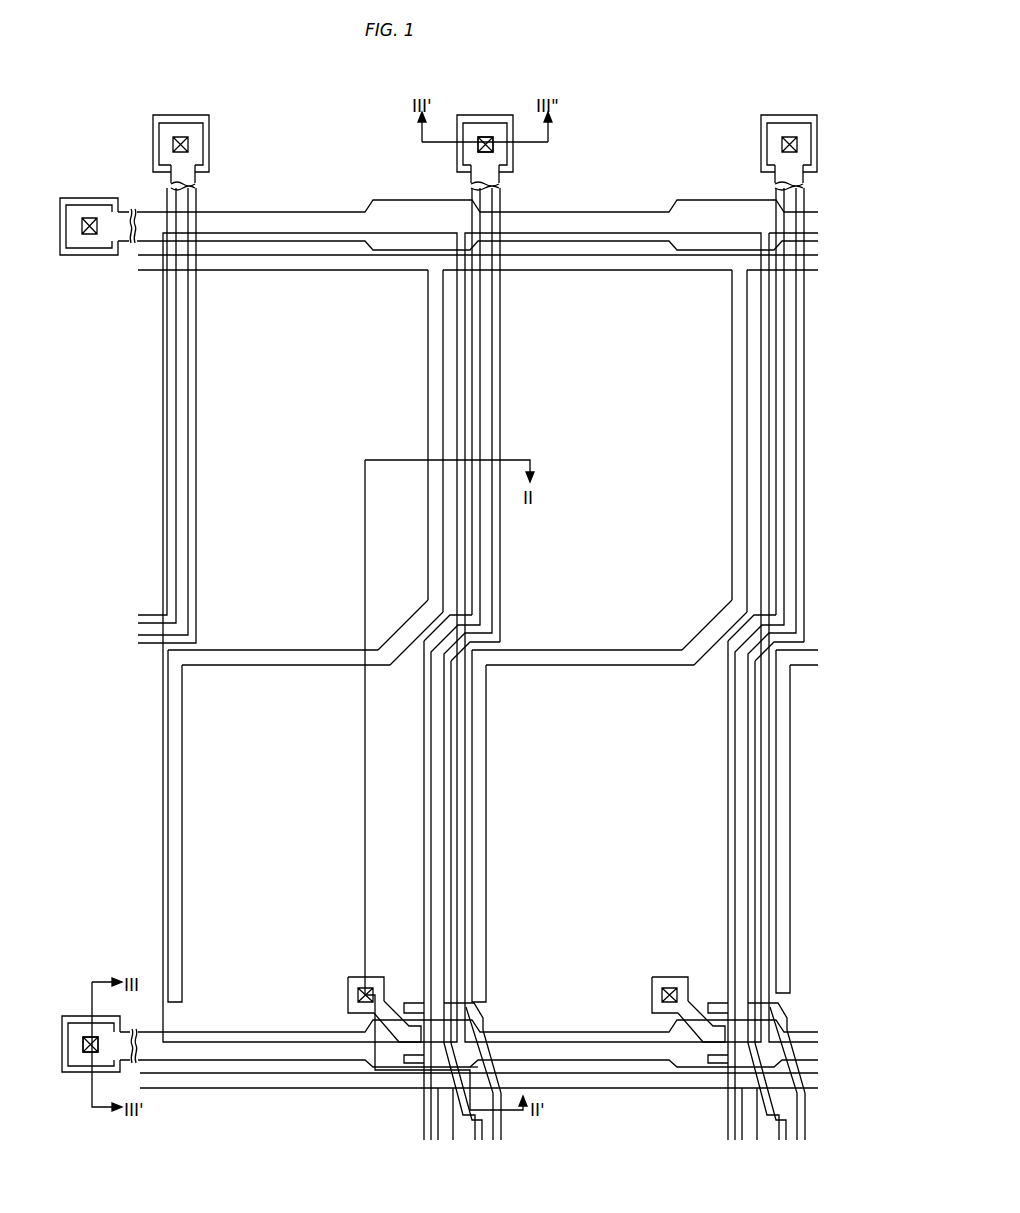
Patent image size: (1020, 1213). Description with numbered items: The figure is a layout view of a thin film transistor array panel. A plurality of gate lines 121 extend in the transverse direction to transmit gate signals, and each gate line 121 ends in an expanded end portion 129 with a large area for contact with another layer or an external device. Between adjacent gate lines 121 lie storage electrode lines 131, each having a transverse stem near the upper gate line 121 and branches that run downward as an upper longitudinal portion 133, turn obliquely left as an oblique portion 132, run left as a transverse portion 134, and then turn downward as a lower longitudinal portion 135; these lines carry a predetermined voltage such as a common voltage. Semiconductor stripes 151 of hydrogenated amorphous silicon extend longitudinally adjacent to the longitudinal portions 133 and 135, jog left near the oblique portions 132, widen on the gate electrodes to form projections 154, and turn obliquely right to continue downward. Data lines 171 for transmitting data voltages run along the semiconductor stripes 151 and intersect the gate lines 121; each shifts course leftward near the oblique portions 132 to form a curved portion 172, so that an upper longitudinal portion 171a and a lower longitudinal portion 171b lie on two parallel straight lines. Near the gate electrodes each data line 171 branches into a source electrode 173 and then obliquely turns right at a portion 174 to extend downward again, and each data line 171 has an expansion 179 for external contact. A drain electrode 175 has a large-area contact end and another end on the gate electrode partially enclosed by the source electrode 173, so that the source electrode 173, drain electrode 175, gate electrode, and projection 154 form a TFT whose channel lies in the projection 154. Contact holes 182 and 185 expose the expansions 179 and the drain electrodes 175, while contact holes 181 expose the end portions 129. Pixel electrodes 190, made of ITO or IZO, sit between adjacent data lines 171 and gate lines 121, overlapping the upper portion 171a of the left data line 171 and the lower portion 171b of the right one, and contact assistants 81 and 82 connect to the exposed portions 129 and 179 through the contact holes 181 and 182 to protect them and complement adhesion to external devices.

The contact assistant 81 is at (64, 1037).
The contact assistant 82 is at (493, 115).
The gate line 121 is at (236, 1061).
The expanded end portion 129 is at (82, 1067).
The storage electrode line 131 is at (619, 272).
The oblique portion 132 is at (416, 612).
The upper longitudinal portion 133 is at (428, 396).
The transverse portion 134 is at (296, 666).
The lower longitudinal portion 135 is at (183, 794).
The semiconductor stripe 151 is at (492, 366).
The projection 154 is at (487, 1020).
The data line 171 is at (503, 206).
The upper longitudinal portion 171a is at (500, 422).
The lower longitudinal portion 171b is at (453, 728).
The curved portion 172 is at (481, 640).
The source electrode 173 is at (416, 1063).
The oblique right turn 174 is at (466, 1057).
The drain electrode 175 is at (366, 1015).
The expansion 179 is at (509, 157).
The contact hole 181 is at (90, 1040).
The contact hole 182 is at (478, 146).
The contact hole 185 is at (360, 1000).
The pixel electrode 190 is at (285, 232).